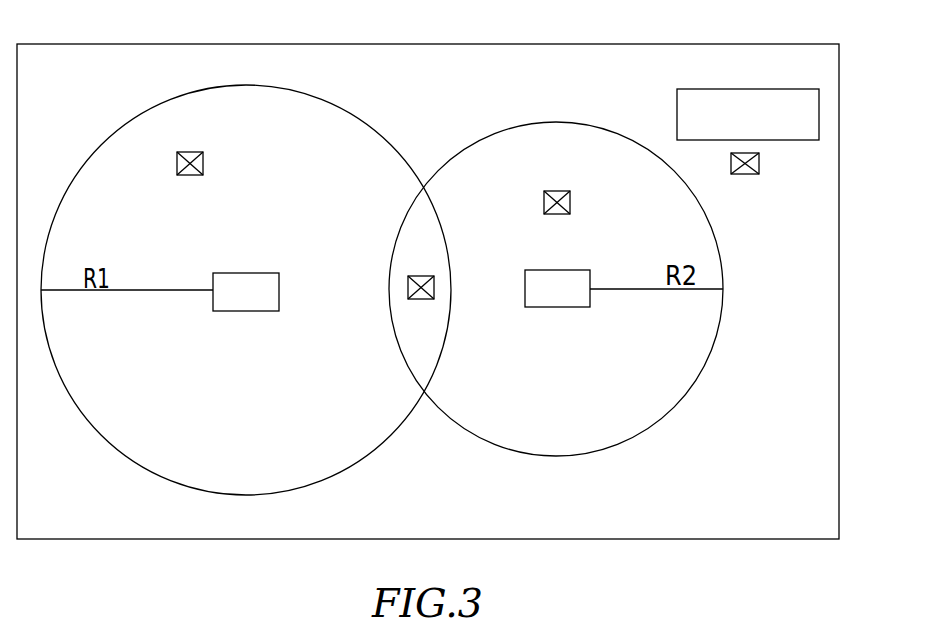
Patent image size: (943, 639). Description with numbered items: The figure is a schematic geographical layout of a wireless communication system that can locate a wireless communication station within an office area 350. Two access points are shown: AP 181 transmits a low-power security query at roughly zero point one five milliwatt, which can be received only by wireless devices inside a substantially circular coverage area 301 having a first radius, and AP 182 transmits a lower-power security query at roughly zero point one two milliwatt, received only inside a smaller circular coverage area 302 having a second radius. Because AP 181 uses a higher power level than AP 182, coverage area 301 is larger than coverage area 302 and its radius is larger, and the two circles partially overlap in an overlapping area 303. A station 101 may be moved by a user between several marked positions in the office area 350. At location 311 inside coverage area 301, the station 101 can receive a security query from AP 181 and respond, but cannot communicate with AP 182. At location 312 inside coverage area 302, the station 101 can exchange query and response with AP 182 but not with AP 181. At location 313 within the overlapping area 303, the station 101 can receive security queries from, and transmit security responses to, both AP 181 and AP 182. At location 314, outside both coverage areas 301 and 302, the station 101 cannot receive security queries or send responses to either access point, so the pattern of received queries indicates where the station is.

The office area 350 is at (115, 44).
The coverage area 301 is at (308, 426).
The coverage area 302 is at (597, 391).
The overlapping area 303 is at (416, 338).
The station 101 is at (748, 88).
The AP 181 is at (243, 312).
The AP 182 is at (555, 308).
The location 311 is at (203, 163).
The location 312 is at (570, 203).
The location 313 is at (434, 288).
The location 314 is at (759, 165).